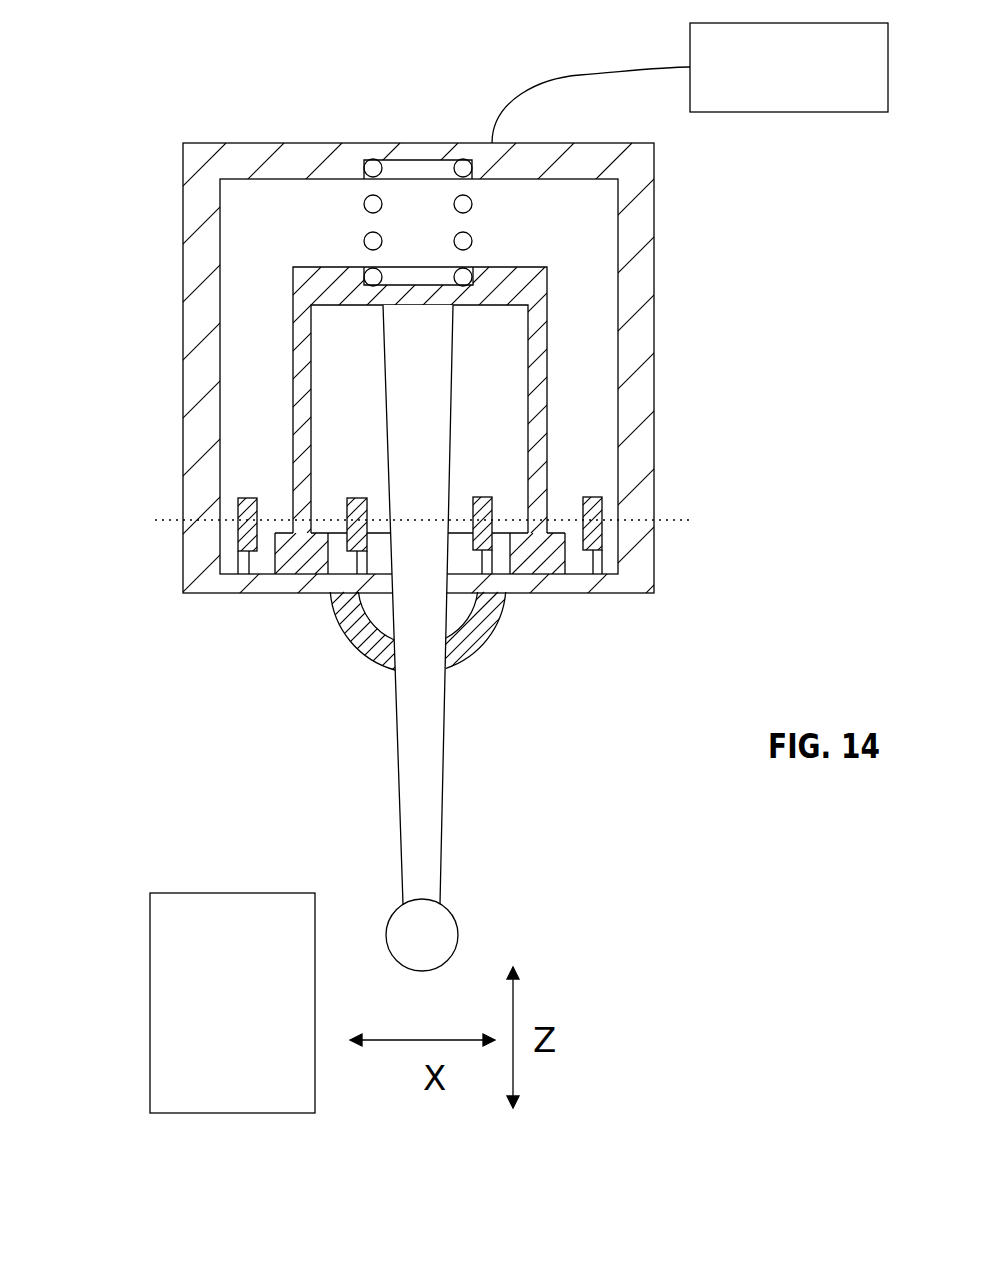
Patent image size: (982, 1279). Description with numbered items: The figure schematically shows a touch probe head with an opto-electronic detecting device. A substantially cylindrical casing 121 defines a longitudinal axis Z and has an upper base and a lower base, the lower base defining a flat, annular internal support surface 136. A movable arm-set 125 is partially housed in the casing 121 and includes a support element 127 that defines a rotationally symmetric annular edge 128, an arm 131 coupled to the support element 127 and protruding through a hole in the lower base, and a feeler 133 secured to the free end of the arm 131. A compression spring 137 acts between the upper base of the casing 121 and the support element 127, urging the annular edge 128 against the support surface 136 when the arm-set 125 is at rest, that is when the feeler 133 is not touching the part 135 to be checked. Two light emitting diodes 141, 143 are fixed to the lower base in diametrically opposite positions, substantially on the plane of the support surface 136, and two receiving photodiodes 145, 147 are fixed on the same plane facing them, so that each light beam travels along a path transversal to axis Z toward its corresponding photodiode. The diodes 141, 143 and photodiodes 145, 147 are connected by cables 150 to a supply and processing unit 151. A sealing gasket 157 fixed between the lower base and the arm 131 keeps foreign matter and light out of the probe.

The casing 121 is at (641, 236).
The movable arm-set 125 is at (575, 340).
The support element 127 is at (537, 375).
The annular edge 128 is at (538, 513).
The arm 131 is at (433, 692).
The feeler 133 is at (441, 937).
The part to be checked 135 is at (162, 985).
The internal support surface 136 is at (322, 532).
The compression spring 137 is at (366, 203).
The light emitting diode 141 is at (239, 503).
The light emitting diode 143 is at (597, 497).
The receiving photodiode 145 is at (320, 524).
The receiving photodiode 147 is at (488, 496).
The cables 150 is at (570, 85).
The supply and processing unit 151 is at (823, 93).
The sealing gasket 157 is at (363, 660).